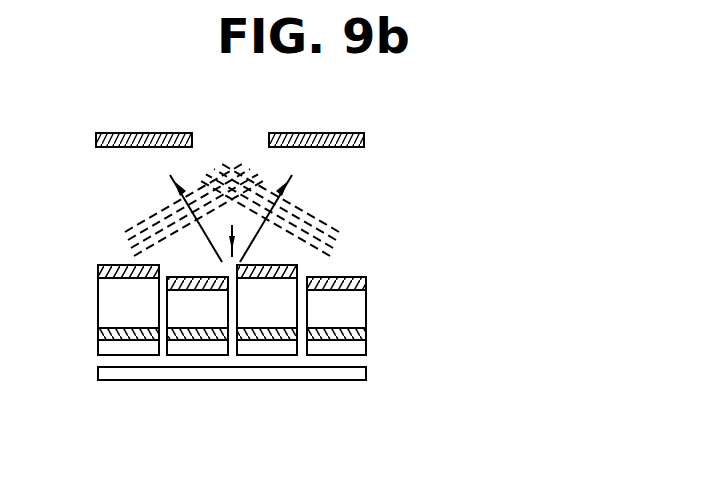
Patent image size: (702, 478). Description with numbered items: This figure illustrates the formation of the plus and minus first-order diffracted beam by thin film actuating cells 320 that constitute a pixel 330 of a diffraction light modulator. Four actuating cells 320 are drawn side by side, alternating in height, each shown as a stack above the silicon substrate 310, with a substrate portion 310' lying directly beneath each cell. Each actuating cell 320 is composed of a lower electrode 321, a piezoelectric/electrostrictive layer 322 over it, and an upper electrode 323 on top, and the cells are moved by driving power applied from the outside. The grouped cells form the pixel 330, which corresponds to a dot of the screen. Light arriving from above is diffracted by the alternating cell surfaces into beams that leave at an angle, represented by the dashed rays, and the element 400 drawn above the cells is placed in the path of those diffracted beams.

The mask 400 is at (309, 122).
The pixel 330 is at (322, 302).
The actuating cell 320 is at (322, 311).
The upper electrode 323 is at (366, 281).
The piezoelectric/electrostrictive layer 322 is at (366, 310).
The lower electrode 321 is at (366, 333).
The patterned substrate portion 310' is at (292, 363).
The silicon substrate 310 is at (289, 390).